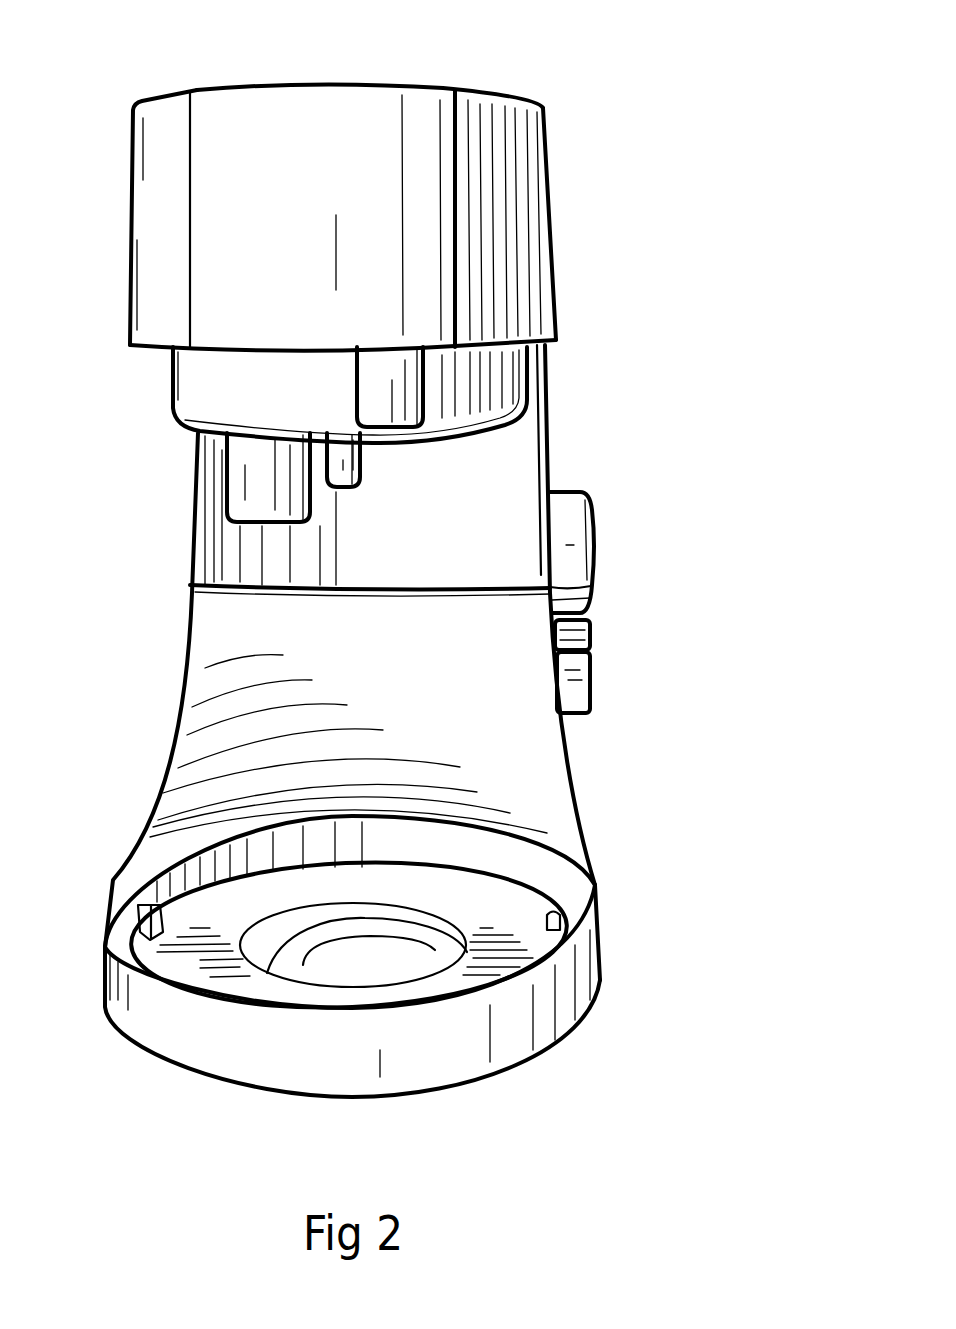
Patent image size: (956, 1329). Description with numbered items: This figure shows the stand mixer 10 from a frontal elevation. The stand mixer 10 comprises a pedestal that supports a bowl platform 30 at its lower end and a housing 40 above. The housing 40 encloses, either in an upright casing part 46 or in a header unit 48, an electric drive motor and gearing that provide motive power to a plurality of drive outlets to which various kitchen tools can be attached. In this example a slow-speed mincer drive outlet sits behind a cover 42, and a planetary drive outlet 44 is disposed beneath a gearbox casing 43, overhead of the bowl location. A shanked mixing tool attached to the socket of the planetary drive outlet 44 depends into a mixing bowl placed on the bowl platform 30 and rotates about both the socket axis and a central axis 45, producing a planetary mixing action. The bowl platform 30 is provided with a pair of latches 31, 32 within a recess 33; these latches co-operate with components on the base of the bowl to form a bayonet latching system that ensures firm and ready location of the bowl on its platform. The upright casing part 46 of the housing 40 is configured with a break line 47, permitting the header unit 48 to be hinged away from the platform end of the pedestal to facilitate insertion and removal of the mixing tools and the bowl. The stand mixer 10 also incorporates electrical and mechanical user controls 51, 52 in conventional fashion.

The stand mixer 10 is at (636, 281).
The bowl platform 30 is at (580, 970).
The latch 31 is at (138, 918).
The latch 32 is at (550, 918).
The recess 33 is at (243, 962).
The housing 40 is at (512, 452).
The cover 42 is at (260, 137).
The gearbox casing 43 is at (222, 408).
The planetary drive outlet 44 is at (262, 488).
The central axis 45 is at (347, 487).
The upright casing part 46 is at (547, 368).
The break line 47 is at (432, 587).
The header unit 48 is at (387, 78).
The user control 51 is at (590, 665).
The user control 52 is at (593, 540).